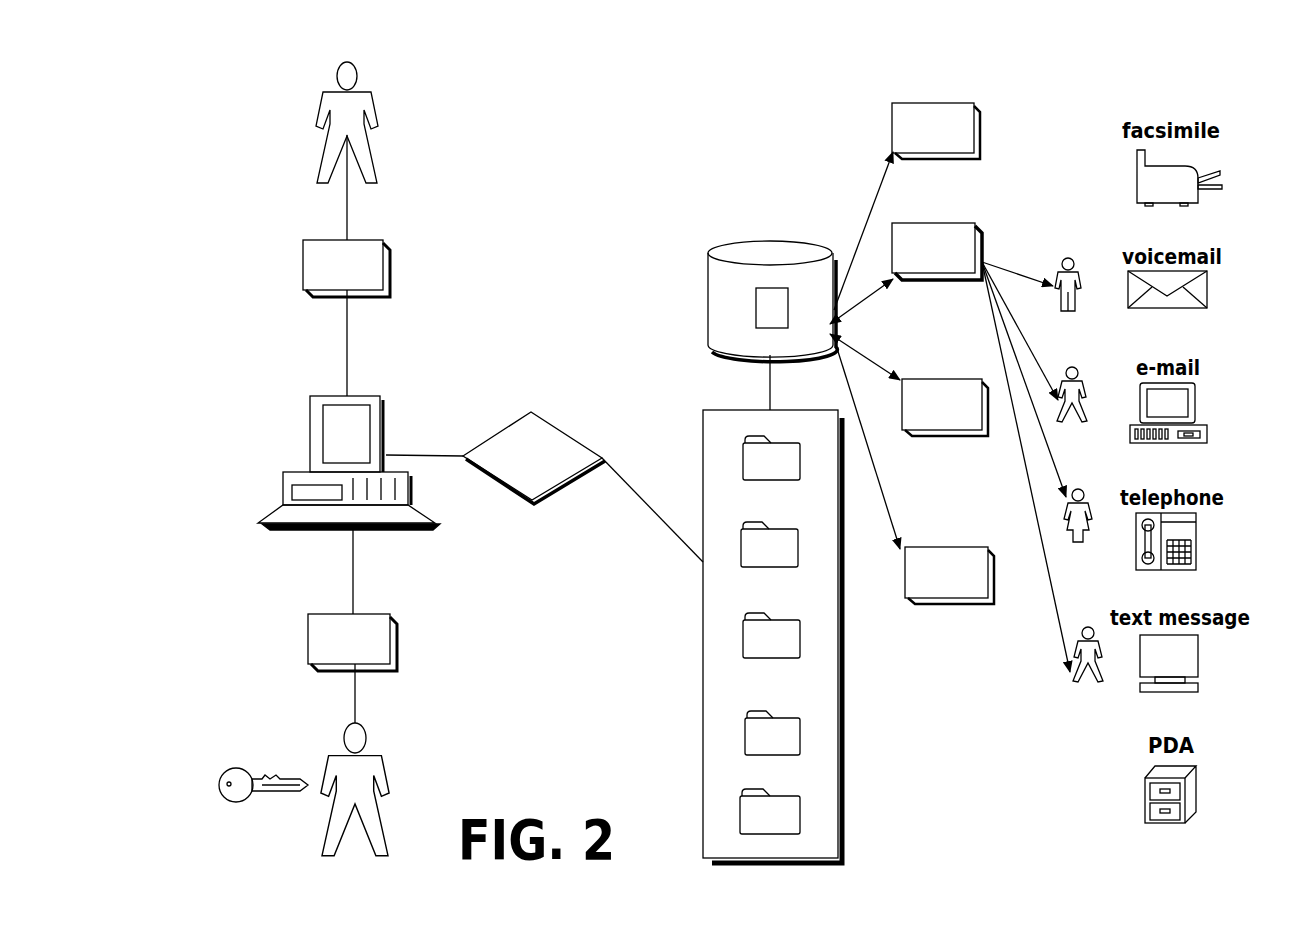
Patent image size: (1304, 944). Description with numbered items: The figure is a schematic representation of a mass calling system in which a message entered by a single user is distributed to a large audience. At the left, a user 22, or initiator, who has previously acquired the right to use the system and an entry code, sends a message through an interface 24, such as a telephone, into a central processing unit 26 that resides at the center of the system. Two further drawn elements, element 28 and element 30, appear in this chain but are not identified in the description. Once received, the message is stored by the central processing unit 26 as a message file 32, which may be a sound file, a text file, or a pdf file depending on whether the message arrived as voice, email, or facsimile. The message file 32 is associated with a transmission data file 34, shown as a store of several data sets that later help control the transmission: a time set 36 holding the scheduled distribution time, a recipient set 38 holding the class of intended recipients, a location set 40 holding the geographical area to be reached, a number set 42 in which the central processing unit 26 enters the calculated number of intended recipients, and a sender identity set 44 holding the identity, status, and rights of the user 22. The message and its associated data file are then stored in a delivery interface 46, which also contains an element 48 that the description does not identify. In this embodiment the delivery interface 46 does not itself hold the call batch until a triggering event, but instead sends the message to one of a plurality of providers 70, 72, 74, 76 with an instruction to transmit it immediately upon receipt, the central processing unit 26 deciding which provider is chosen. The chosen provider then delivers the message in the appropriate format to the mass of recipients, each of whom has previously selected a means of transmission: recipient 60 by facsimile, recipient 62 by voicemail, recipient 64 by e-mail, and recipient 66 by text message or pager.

The user 22 is at (339, 121).
The interface 24 is at (340, 254).
The central processing unit 26 is at (349, 449).
The authentication device 28 is at (349, 630).
The authorized user with key 30 is at (304, 786).
The message file 32 is at (534, 436).
The transmission data file 34 is at (764, 617).
The time set 36 is at (759, 449).
The recipient set 38 is at (757, 534).
The location set 40 is at (760, 626).
The number set 42 is at (760, 718).
The sender identity set 44 is at (755, 810).
The delivery interface 46 is at (771, 289).
The database record 48 is at (756, 305).
The recipient 60 is at (1070, 271).
The recipient 62 is at (1075, 384).
The recipient 64 is at (1080, 501).
The recipient 66 is at (1084, 639).
The provider 70 is at (933, 117).
The provider 72 is at (935, 240).
The provider 74 is at (945, 393).
The provider 76 is at (949, 558).